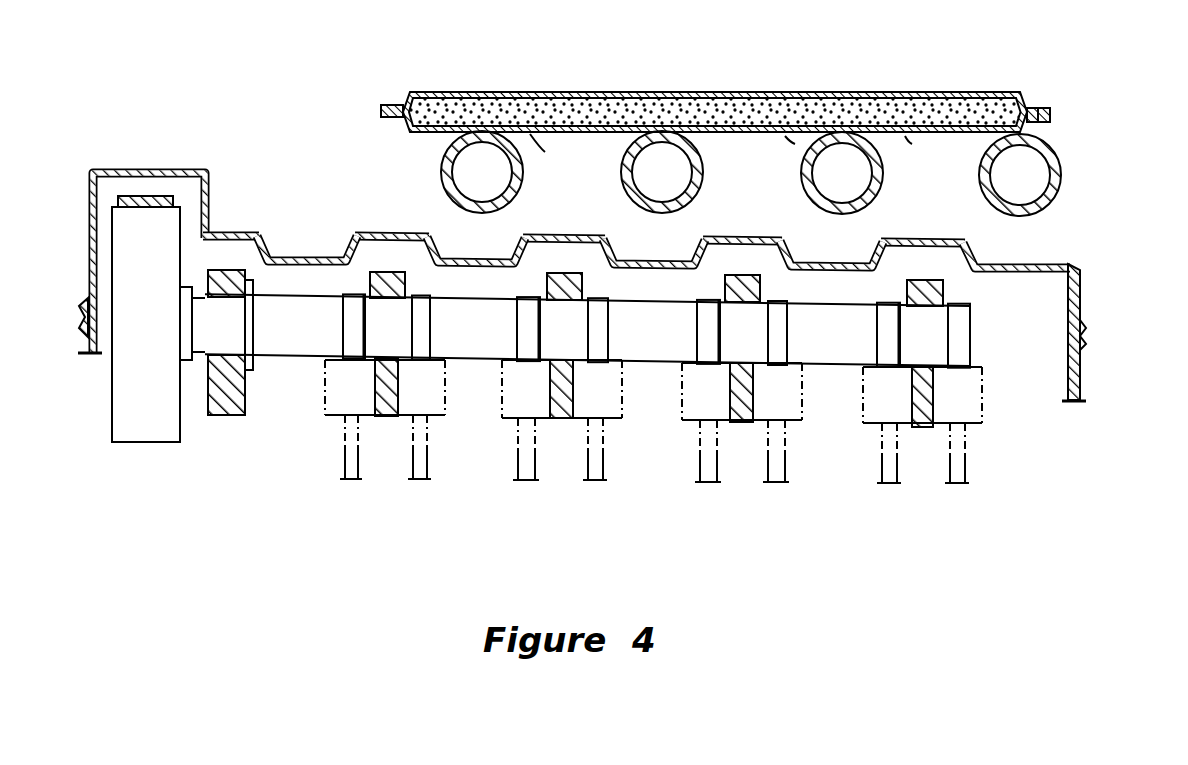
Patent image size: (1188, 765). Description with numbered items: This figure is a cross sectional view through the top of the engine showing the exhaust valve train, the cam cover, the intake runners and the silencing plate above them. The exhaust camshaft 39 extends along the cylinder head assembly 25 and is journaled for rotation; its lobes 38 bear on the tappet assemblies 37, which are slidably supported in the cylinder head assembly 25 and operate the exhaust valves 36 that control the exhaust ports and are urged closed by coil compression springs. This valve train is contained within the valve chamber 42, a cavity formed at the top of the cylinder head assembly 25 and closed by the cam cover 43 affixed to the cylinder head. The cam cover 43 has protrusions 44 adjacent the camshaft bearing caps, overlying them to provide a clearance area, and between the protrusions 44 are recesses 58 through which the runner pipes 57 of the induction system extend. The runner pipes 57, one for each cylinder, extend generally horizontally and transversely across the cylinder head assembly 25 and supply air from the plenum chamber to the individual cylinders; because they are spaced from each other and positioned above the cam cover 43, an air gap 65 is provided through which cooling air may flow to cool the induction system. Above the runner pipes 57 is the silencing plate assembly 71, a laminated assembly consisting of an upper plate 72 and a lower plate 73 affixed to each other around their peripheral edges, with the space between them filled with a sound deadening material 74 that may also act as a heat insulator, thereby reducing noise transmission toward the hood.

The cylinder head assembly 25 is at (1080, 373).
The exhaust valves 36 is at (423, 463).
The tappet assemblies 37 is at (337, 412).
The lobes 38 is at (352, 342).
The exhaust camshaft 39 is at (837, 343).
The valve chamber 42 is at (268, 433).
The cam cover 43 is at (148, 168).
The protrusions 44 is at (383, 227).
The runner pipes 57 is at (441, 183).
The recesses 58 is at (277, 252).
The air gap 65 is at (540, 150).
The silencing plate assembly 71 is at (585, 92).
The upper plate 72 is at (422, 92).
The lower plate 73 is at (637, 127).
The sound deadening material 74 is at (727, 110).